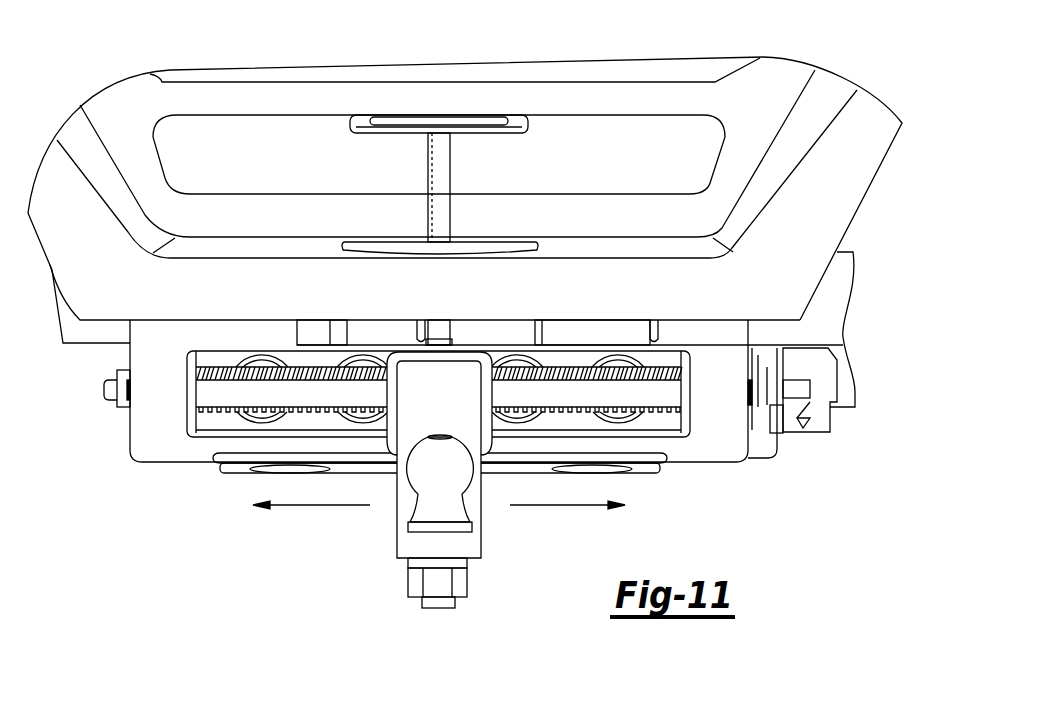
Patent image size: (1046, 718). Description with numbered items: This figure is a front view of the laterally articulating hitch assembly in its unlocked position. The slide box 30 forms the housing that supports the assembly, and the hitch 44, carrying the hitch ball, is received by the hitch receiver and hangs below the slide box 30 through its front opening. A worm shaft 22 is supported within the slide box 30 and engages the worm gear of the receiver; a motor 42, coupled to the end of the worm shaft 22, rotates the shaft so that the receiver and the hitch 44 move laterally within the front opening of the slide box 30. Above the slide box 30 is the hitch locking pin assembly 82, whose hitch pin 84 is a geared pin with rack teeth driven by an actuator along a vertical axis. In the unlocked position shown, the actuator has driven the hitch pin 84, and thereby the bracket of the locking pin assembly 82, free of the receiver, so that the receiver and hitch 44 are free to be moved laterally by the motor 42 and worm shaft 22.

The hitch locking pin assembly 82 is at (446, 108).
The hitch pin 84 is at (440, 162).
The slide box 30 is at (153, 427).
The worm shaft 22 is at (667, 397).
The motor 42 is at (822, 413).
The hitch 44 is at (403, 515).